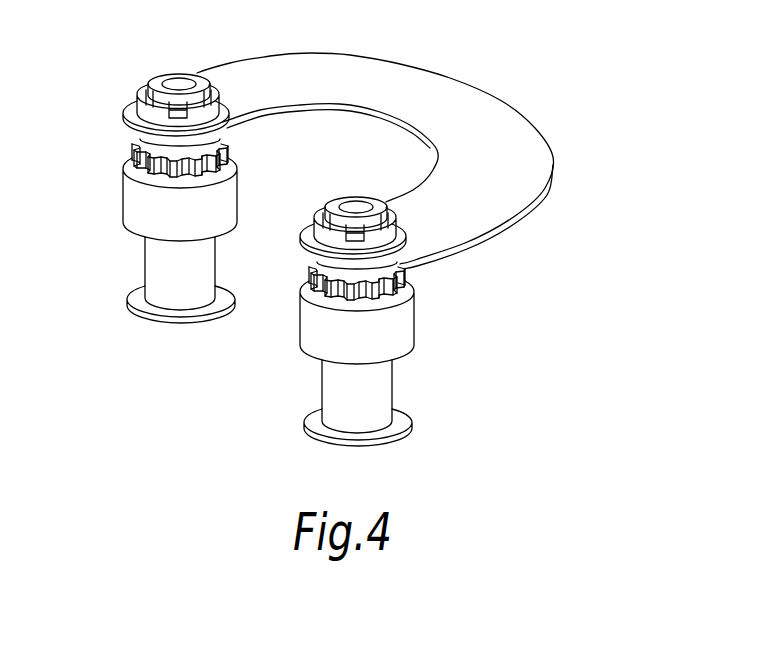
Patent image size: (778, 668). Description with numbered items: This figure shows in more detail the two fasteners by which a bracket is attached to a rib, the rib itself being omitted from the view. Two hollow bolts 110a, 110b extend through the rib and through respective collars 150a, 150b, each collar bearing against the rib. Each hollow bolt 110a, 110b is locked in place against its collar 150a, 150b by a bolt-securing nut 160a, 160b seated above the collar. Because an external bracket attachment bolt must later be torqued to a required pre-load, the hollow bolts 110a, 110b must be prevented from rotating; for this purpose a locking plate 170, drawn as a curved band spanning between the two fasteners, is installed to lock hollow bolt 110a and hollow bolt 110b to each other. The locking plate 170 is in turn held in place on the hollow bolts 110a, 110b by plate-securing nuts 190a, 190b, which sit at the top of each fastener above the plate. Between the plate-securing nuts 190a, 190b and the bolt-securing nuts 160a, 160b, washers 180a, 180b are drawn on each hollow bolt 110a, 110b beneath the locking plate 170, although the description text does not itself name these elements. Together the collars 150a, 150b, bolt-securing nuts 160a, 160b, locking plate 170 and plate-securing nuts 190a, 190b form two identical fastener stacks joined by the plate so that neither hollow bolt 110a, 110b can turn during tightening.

The hollow bolt 110a is at (157, 268).
The hollow bolt 110b is at (373, 400).
The collar 150a is at (148, 217).
The collar 150b is at (395, 340).
The bolt-securing nut 160a is at (130, 150).
The bolt-securing nut 160b is at (398, 292).
The locking plate 170 is at (415, 88).
The first washer 180a is at (220, 97).
The second washer 180b is at (392, 238).
The plate-securing nut 190a is at (172, 82).
The plate-securing nut 190b is at (355, 209).